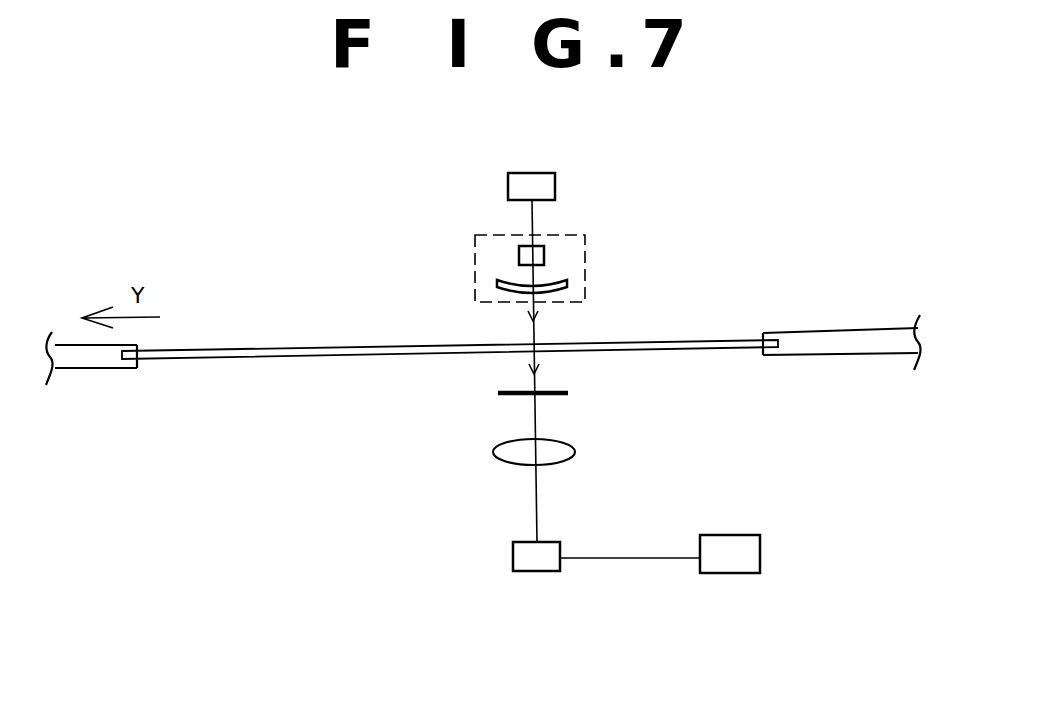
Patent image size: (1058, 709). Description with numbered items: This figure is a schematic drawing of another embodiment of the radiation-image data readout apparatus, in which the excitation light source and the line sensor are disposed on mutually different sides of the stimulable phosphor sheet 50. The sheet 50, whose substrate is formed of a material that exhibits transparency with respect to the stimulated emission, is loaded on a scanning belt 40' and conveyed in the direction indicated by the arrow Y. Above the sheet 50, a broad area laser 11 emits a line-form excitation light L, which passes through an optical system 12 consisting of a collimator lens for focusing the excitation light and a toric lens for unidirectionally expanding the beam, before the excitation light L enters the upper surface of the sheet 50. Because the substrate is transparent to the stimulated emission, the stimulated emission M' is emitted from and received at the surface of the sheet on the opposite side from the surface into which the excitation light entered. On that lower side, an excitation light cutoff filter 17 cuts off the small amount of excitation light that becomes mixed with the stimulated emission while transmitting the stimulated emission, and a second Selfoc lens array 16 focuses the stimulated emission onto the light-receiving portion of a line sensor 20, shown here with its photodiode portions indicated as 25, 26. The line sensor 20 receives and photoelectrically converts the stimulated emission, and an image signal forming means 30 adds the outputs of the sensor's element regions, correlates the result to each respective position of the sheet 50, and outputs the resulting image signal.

The broad area laser 11 is at (555, 190).
The optical system 12 is at (587, 265).
The second Selfoc lens array 16 is at (575, 448).
The excitation light cutoff filter 17 is at (568, 391).
The line sensor 20 is at (536, 574).
The light receiving element 25 is at (536, 556).
The light receiving element 26 is at (504, 573).
The image signal forming means 30 is at (730, 554).
The stage 40' is at (91, 390).
The stimulable phosphor sheet 50 is at (700, 340).
The excitation light L is at (534, 334).
The measurement point M' is at (474, 413).